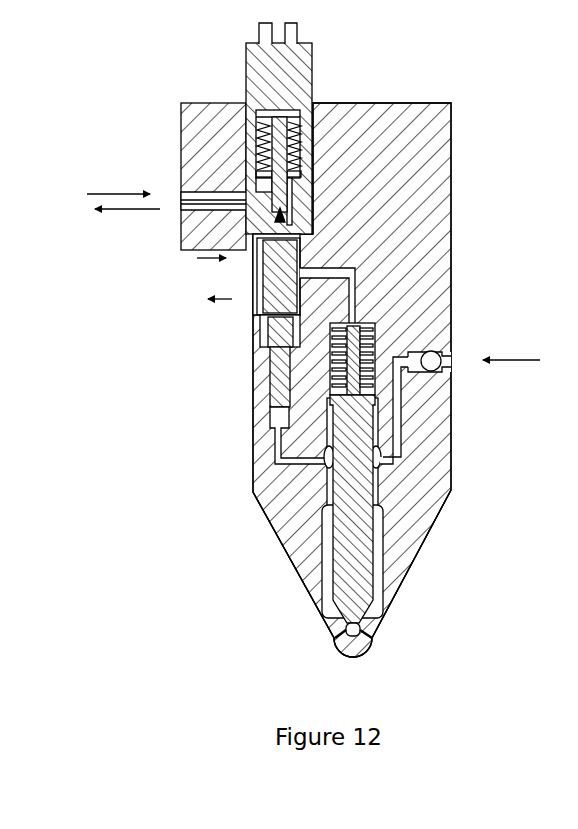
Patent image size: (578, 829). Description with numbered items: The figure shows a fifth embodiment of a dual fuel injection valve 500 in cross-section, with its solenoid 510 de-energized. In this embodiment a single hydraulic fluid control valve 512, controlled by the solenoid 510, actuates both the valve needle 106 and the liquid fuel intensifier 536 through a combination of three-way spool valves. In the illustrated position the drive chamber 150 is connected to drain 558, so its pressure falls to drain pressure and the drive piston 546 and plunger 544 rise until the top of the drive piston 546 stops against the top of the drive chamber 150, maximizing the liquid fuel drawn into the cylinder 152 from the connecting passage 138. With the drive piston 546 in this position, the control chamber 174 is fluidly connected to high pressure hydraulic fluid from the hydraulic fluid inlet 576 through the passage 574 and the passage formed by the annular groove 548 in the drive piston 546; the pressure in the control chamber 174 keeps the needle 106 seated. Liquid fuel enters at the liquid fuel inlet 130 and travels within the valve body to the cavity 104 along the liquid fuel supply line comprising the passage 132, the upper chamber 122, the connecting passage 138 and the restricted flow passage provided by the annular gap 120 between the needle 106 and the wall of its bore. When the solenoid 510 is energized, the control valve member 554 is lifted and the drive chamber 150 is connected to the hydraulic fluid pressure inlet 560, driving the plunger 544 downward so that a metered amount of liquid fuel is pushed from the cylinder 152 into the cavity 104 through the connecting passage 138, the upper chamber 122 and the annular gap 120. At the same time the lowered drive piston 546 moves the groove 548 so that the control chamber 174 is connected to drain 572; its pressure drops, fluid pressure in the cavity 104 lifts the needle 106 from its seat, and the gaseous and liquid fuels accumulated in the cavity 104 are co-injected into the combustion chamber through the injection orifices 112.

The fuel injection valve 500 is at (424, 65).
The solenoid 510 is at (290, 78).
The hydraulic fluid control valve 512 is at (252, 133).
The control valve member 554 is at (265, 150).
The drive chamber 150 is at (278, 214).
The annular groove 548 is at (302, 243).
The passage 574 is at (354, 270).
The control chamber 174 is at (385, 333).
The liquid fuel inlet 130 is at (452, 364).
The liquid fuel passage 132 is at (397, 424).
The upper chamber 122 is at (383, 480).
The annular passage 120 is at (372, 500).
The needle 106 is at (357, 590).
The cavity 104 is at (383, 619).
The injection orifices 112 is at (366, 640).
The connecting passage 138 is at (262, 507).
The cylinder 152 is at (272, 420).
The liquid fuel intensifier 536 is at (256, 397).
The plunger 544 is at (266, 372).
The drive piston 546 is at (268, 325).
The drain 572 is at (262, 302).
The hydraulic fluid inlet 576 is at (254, 258).
The drain 558 is at (181, 218).
The hydraulic fluid pressure inlet 560 is at (181, 195).